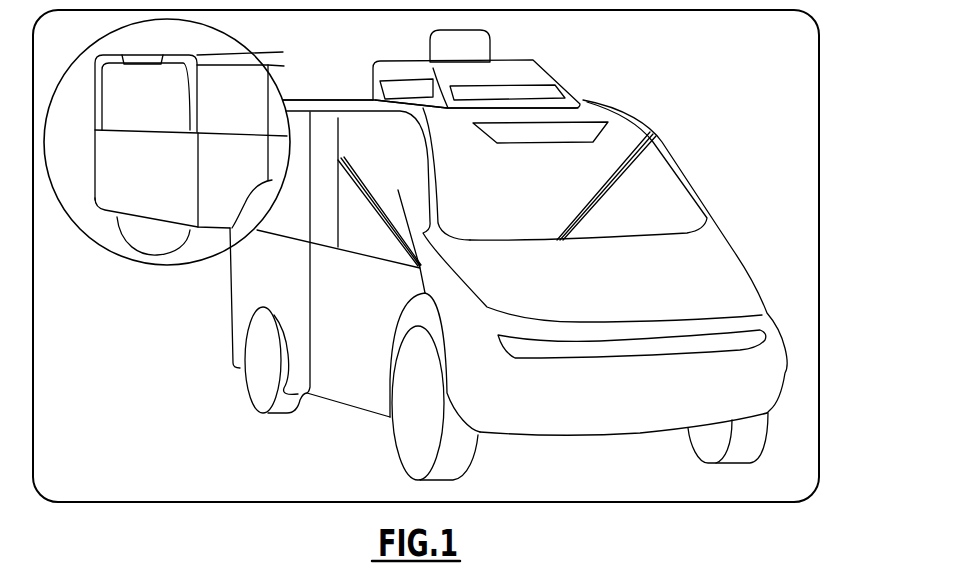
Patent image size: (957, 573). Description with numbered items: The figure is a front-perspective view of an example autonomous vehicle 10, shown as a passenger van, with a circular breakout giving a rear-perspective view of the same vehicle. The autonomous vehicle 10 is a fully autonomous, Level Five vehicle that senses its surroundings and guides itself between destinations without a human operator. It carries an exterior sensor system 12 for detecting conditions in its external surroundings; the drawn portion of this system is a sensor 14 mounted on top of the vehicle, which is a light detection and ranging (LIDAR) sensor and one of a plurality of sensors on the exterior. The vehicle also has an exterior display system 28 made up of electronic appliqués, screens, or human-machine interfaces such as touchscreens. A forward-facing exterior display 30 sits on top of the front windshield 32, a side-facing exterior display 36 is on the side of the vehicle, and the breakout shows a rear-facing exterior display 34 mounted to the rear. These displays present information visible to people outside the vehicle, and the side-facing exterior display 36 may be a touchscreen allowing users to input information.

The autonomous vehicle 10 is at (785, 164).
The exterior sensor system 12 is at (615, 75).
The sensor 14 is at (480, 46).
The exterior display system 28 is at (352, 80).
The forward-facing exterior display 30 is at (540, 132).
The front windshield 32 is at (640, 182).
The rear-facing exterior display 34 is at (148, 60).
The side-facing exterior display 36 is at (320, 221).